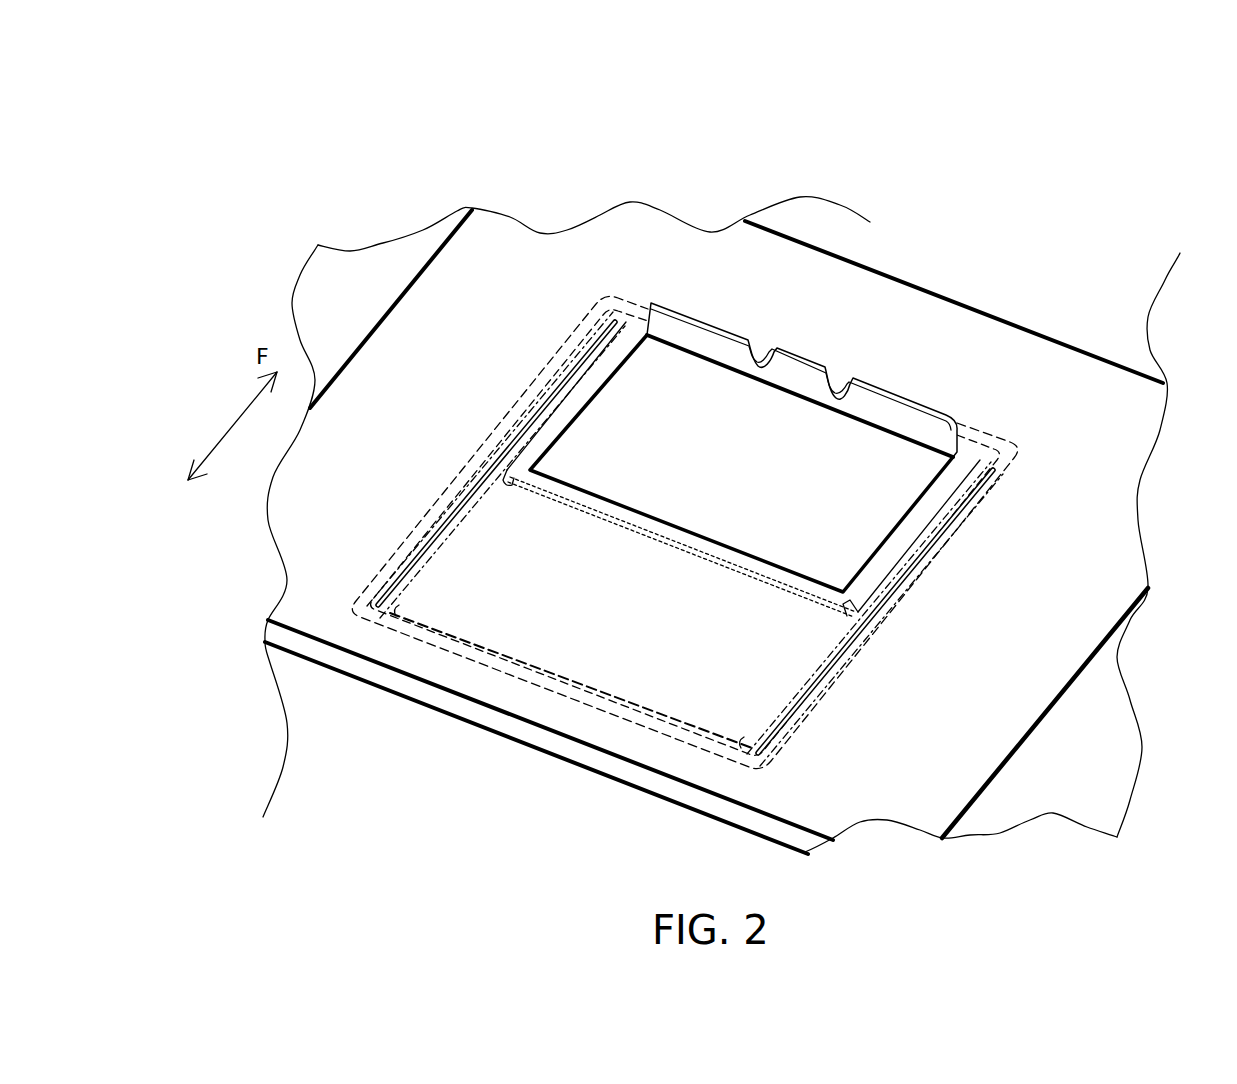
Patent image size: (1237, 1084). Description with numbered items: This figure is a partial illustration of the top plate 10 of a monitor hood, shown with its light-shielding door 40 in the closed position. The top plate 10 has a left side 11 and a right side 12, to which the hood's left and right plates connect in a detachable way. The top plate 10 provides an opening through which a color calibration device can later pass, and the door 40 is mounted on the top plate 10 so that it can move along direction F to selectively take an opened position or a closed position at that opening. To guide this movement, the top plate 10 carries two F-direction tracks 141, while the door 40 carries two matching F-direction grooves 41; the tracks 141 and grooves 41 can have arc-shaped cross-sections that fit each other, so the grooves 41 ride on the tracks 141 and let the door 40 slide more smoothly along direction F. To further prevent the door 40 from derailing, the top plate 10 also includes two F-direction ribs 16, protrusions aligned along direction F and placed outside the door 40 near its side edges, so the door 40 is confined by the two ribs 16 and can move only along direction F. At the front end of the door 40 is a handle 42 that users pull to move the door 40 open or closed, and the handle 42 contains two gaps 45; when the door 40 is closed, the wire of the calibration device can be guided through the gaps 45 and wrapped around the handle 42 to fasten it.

The top plate 10 is at (1002, 194).
The left side 11 is at (417, 272).
The right side 12 is at (1053, 712).
The tracks 141 is at (403, 615).
The ribs 16 is at (480, 476).
The door 40 is at (857, 502).
The grooves 41 is at (510, 482).
The handle 42 is at (910, 424).
The gaps 45 is at (843, 387).